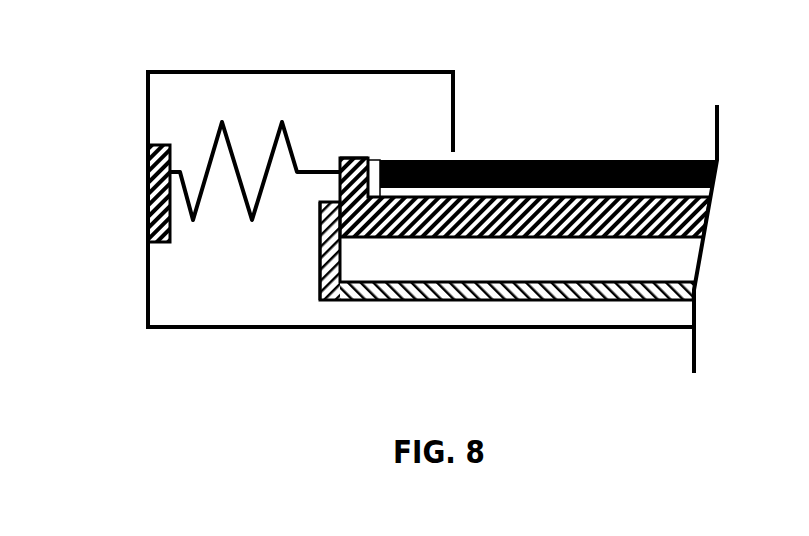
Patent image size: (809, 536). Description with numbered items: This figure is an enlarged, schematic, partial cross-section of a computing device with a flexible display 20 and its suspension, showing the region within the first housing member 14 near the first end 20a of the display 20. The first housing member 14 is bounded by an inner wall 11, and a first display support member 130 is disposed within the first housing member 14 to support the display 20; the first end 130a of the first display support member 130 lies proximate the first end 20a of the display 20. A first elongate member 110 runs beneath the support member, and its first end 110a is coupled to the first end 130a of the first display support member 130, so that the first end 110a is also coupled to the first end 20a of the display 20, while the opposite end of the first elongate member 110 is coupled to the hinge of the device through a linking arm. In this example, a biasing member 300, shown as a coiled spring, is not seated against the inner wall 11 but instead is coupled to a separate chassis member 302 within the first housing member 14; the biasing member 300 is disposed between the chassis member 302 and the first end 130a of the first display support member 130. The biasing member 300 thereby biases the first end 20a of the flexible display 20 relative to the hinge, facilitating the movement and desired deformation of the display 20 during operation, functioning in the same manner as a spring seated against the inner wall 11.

The inner wall 11 is at (147, 120).
The first housing member 14 is at (455, 84).
The flexible display 20 is at (533, 158).
The first end 20a is at (377, 152).
The first elongate member 110 is at (548, 302).
The first end 110a is at (315, 274).
The first display support member 130 is at (653, 238).
The first end 130a is at (334, 150).
The biasing member 300 is at (247, 208).
The chassis member 302 is at (158, 243).